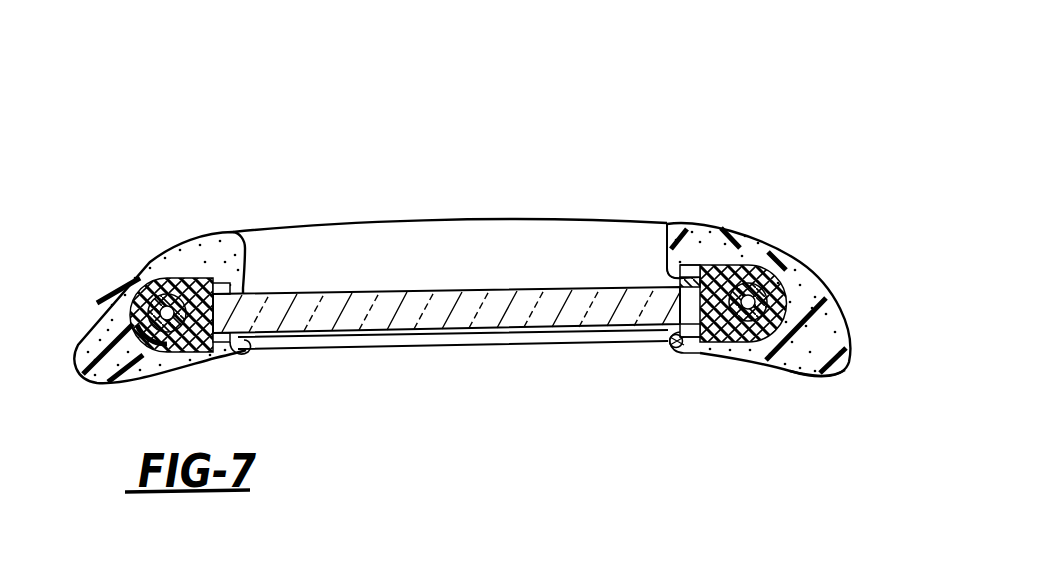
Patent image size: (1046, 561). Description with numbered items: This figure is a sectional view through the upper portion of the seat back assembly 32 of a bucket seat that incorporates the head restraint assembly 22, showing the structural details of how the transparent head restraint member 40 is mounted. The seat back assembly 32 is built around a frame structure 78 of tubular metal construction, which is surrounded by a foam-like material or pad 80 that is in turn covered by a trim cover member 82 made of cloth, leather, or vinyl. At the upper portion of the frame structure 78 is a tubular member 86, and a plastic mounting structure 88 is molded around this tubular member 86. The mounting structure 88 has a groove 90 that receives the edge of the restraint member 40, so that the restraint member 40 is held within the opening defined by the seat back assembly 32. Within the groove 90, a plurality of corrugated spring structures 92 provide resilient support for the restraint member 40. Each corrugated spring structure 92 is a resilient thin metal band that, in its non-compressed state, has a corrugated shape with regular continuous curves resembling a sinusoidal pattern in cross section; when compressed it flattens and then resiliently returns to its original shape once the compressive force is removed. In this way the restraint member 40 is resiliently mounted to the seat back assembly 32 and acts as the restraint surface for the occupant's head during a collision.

The head restraint assembly 22 is at (714, 123).
The seat back assembly 32 is at (343, 222).
The transparent head restraint member 40 is at (490, 292).
The frame structure 78 is at (840, 304).
The pad 80 is at (842, 374).
The trim cover member 82 is at (232, 236).
The tubular member 86 is at (758, 265).
The mounting structure 88 is at (658, 274).
The groove 90 is at (657, 341).
The corrugated spring structures 92 is at (700, 268).